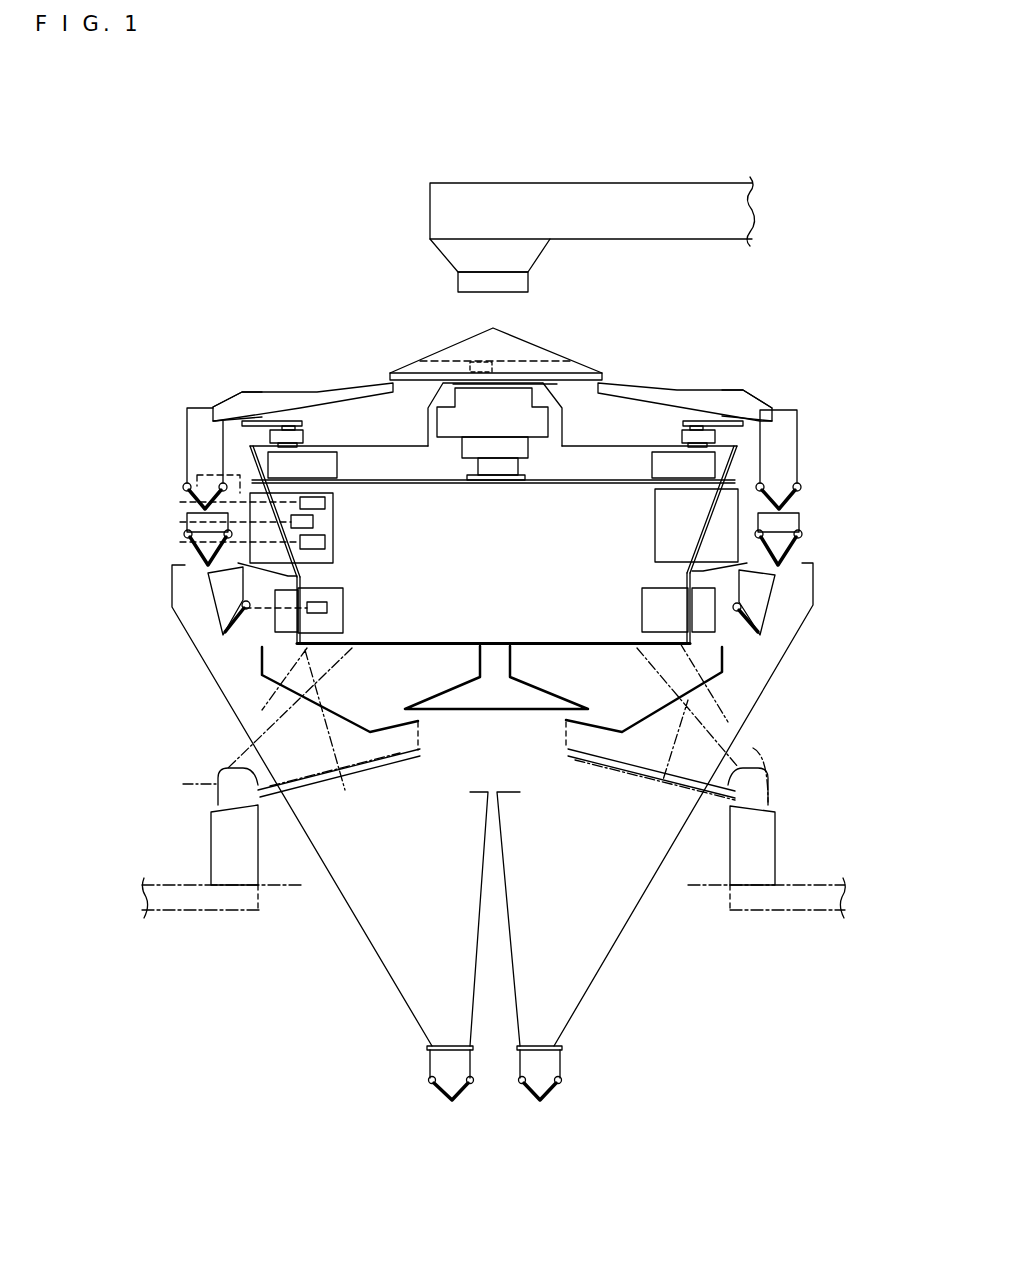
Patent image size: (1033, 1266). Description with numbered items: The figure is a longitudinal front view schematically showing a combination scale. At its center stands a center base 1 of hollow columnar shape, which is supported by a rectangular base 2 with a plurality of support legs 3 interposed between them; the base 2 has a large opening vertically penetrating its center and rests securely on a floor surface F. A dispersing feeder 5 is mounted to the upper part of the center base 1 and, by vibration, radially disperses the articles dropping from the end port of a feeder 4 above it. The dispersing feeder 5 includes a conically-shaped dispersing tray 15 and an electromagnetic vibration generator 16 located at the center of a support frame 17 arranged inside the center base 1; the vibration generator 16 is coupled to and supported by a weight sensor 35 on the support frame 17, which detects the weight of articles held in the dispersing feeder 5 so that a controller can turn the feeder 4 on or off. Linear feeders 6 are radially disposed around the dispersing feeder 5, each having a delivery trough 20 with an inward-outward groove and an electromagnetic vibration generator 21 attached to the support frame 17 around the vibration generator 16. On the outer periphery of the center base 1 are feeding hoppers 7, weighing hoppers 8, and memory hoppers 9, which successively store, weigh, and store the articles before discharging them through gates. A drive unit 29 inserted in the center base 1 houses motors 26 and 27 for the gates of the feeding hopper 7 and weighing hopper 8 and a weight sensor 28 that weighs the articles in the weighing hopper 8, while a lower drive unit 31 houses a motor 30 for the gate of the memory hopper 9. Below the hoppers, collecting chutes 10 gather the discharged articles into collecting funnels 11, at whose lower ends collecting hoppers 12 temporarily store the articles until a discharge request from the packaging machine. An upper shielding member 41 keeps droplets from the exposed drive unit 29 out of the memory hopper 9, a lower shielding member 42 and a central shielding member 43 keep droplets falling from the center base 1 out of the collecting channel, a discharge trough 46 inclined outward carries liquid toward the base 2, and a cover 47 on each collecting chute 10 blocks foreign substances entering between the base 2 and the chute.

The center base 1 is at (565, 646).
The base 2 is at (211, 853).
The support legs 3 is at (787, 743).
The feeder 4 is at (508, 183).
The dispersing feeder 5 is at (538, 334).
The linear feeders 6 is at (316, 387).
The feeding hoppers 7 is at (187, 440).
The weighing hoppers 8 is at (187, 522).
The memory hoppers 9 is at (208, 598).
The collecting chutes 10 is at (240, 722).
The collecting funnels 11 is at (378, 971).
The collecting hoppers 12 is at (428, 1066).
The dispersing tray 15 is at (447, 357).
The electromagnetic vibration generator 16 is at (537, 432).
The support frame 17 is at (570, 484).
The delivery trough 20 is at (265, 392).
The electromagnetic vibration generator 21 is at (338, 465).
The motor 26 is at (325, 502).
The motor 27 is at (325, 548).
The weight sensor 28 is at (313, 521).
The drive unit 29 is at (342, 531).
The motor 30 is at (328, 613).
The drive unit 31 is at (346, 598).
The weight sensor 35 is at (499, 472).
The upper shielding member 41 is at (265, 571).
The lower shielding member 42 is at (336, 722).
The central shielding member 43 is at (447, 692).
The discharge trough 46 is at (343, 778).
The cover 47 is at (220, 768).
The floor surface F is at (790, 883).